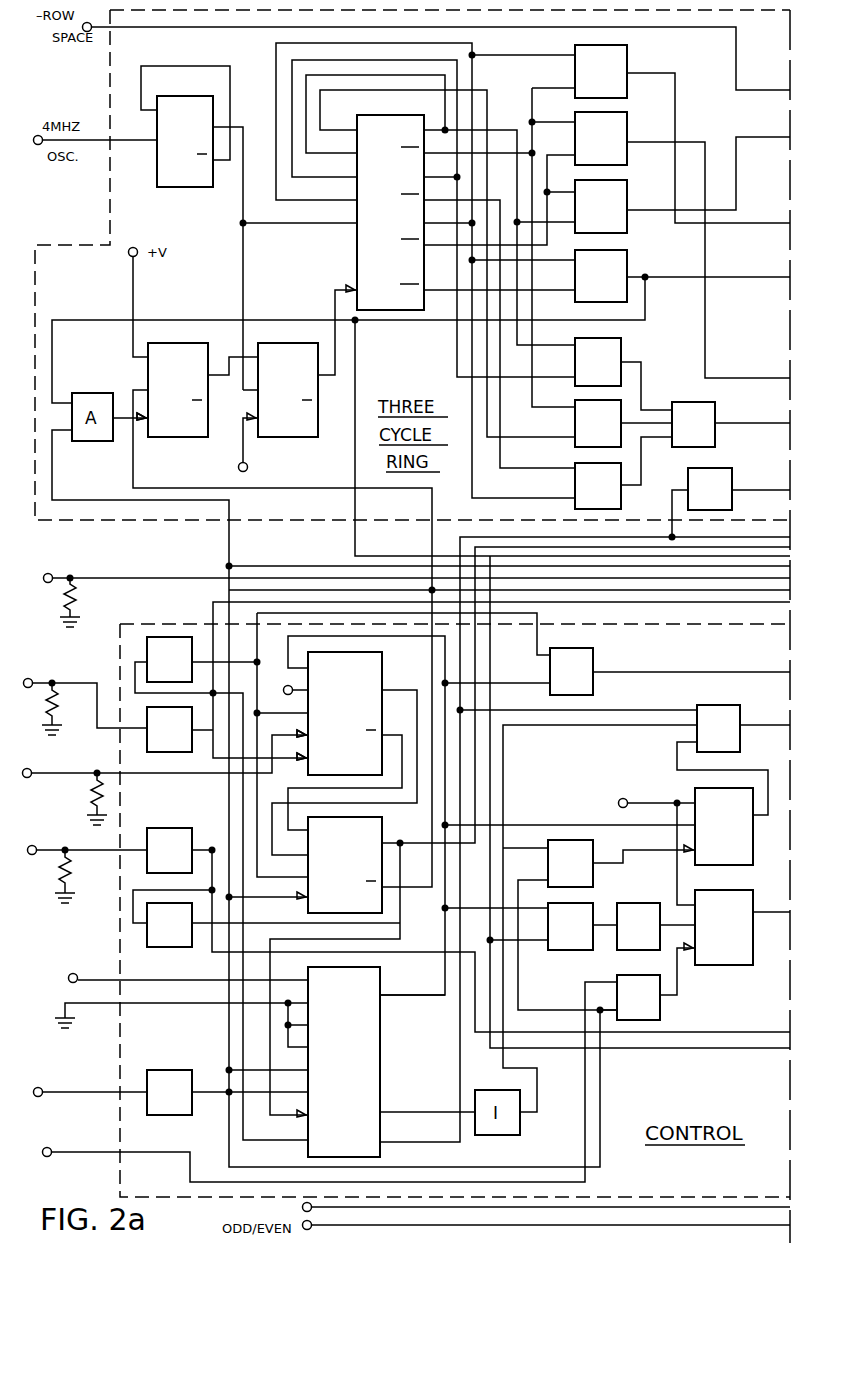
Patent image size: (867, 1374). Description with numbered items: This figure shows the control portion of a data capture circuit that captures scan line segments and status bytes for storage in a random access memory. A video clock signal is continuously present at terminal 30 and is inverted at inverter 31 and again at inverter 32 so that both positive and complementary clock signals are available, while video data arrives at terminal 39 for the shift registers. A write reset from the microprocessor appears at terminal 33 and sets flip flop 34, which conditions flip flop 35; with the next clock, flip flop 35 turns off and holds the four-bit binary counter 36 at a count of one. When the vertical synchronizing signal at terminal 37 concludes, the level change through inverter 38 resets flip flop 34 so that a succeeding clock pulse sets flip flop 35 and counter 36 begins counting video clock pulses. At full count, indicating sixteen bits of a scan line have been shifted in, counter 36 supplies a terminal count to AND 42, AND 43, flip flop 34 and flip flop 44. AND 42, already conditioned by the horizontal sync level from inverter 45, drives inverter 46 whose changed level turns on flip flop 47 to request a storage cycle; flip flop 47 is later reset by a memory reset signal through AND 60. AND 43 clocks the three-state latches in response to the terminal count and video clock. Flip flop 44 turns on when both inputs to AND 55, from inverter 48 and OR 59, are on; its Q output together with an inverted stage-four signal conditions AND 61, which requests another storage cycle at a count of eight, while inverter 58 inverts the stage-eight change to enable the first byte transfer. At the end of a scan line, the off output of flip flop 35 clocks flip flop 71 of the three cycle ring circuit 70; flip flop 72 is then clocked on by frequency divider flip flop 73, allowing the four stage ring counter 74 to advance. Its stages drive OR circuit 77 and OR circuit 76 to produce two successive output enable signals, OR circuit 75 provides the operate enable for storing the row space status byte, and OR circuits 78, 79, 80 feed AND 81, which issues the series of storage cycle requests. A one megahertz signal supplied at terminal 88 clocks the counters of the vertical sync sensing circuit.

The three cycle ring circuit 70 is at (206, 522).
The frequency divider flip flop 73 is at (194, 188).
The four stage ring counter 74 is at (357, 253).
The flip flop 71 is at (183, 439).
The flip flop 72 is at (283, 439).
The OR circuit 77 is at (627, 60).
The OR circuit 76 is at (627, 127).
The OR circuit 75 is at (627, 195).
The OR circuit 59 is at (627, 265).
The OR circuit 78 is at (621, 352).
The OR circuit 79 is at (621, 413).
The OR circuit 80 is at (627, 473).
The AND circuit 81 is at (715, 415).
The inverter 58 is at (732, 472).
The video data input terminal 39 is at (46, 583).
The terminal 30 is at (32, 688).
The terminal 33 is at (27, 778).
The terminal 37 is at (34, 856).
The inverter 32 is at (147, 648).
The inverter 31 is at (147, 718).
The inverter 38 is at (178, 829).
The inverter 45 is at (170, 947).
The inverter 48 is at (165, 1070).
The flip flop 34 is at (382, 660).
The flip flop 35 is at (382, 824).
The 4-bit binary counter 36 is at (380, 971).
The AND circuit 43 is at (593, 663).
The AND circuit 61 is at (712, 705).
The flip flop 44 is at (753, 850).
The AND circuit 55 is at (599, 839).
The AND circuit 42 is at (568, 950).
The inverter 46 is at (628, 903).
The flip flop 47 is at (745, 966).
The AND circuit 60 is at (660, 1010).
The terminal 88 is at (302, 1206).